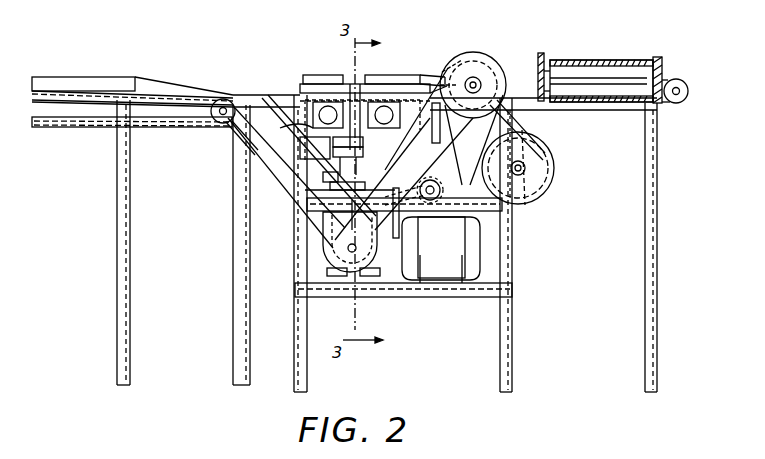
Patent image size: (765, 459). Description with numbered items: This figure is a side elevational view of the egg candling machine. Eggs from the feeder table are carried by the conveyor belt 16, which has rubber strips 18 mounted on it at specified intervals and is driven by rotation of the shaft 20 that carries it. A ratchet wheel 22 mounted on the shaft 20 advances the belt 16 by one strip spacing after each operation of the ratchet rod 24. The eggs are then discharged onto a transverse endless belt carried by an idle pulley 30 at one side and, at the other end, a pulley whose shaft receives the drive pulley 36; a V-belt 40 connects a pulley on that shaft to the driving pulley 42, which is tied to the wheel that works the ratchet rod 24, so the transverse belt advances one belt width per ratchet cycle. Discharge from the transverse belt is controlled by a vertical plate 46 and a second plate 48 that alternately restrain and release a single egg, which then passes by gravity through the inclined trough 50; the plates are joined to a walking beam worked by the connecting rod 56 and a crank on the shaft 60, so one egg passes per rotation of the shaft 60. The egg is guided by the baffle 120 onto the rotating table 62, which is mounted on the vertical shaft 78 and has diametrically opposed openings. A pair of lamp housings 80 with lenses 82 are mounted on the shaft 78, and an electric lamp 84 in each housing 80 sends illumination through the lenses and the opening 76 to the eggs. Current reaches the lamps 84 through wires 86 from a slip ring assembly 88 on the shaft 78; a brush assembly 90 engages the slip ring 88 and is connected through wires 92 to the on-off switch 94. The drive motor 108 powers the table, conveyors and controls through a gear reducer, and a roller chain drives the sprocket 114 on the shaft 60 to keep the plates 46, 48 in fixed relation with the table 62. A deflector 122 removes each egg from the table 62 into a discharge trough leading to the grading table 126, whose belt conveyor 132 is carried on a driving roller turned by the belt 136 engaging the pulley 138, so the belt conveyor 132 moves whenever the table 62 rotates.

The conveyor belt 16 is at (588, 60).
The rubber strips 18 is at (622, 60).
The shaft 20 is at (668, 75).
The ratchet wheel 22 is at (541, 56).
The ratchet rod 24 is at (528, 112).
The idle pulley 30 is at (690, 84).
The drive pulley 36 is at (488, 60).
The V-belt 40 is at (460, 160).
The driving pulley 42 is at (555, 163).
The vertical plate 46 is at (474, 76).
The second plate 48 is at (458, 62).
The inclined trough 50 is at (447, 67).
The connecting rod 56 is at (432, 125).
The shaft 60 is at (443, 190).
The rotating table 62 is at (388, 78).
The opening 76 is at (546, 190).
The vertical shaft 78 is at (356, 210).
The lamp housings 80 is at (358, 119).
The lenses 82 is at (318, 77).
The electric lamp 84 is at (313, 118).
The wires 86 is at (363, 140).
The slip ring assembly 88 is at (360, 160).
The brush assembly 90 is at (300, 150).
The wires 92 is at (322, 178).
The on-off switch 94 is at (310, 182).
The drive motor 108 is at (468, 230).
The sprocket 114 is at (396, 190).
The baffle 120 is at (365, 84).
The deflector 122 is at (351, 84).
The grading table 126 is at (182, 110).
The belt conveyor 132 is at (90, 117).
The belt 136 is at (240, 135).
The pulley 138 is at (220, 123).